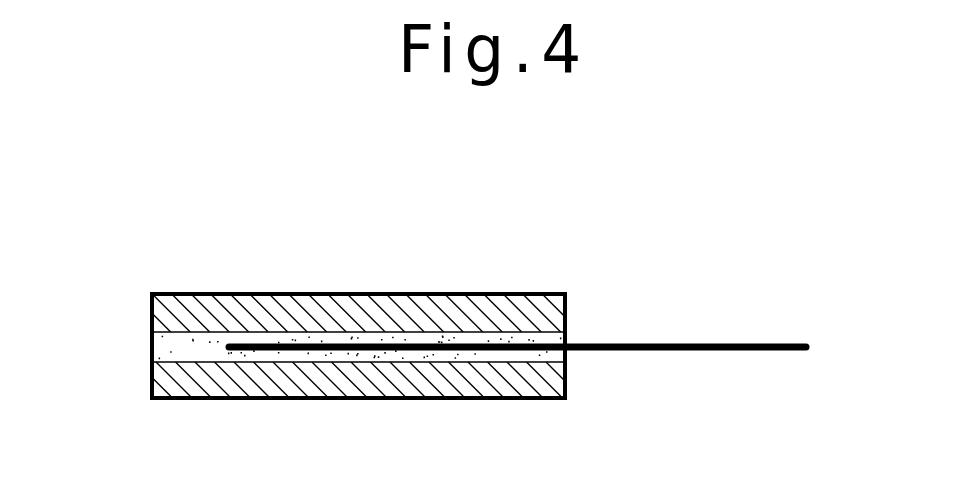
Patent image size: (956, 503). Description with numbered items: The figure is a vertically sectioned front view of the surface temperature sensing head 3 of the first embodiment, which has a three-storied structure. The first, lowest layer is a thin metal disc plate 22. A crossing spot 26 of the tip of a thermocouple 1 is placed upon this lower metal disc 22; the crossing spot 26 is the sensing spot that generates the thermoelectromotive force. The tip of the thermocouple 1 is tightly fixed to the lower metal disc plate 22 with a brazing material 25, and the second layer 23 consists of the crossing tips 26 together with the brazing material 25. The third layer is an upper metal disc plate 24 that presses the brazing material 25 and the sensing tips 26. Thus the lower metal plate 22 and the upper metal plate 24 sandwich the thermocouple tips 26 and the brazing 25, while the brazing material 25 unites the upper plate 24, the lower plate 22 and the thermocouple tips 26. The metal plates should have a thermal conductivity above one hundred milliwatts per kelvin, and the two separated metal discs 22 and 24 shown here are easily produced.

The thermocouple 1 is at (443, 343).
The sensing head 3 is at (344, 223).
The metal disc plate 22 is at (283, 386).
The second layer 23 is at (178, 347).
The metal disc plate 24 is at (540, 316).
The brazing material 25 is at (370, 353).
The crossing spot 26 is at (323, 343).